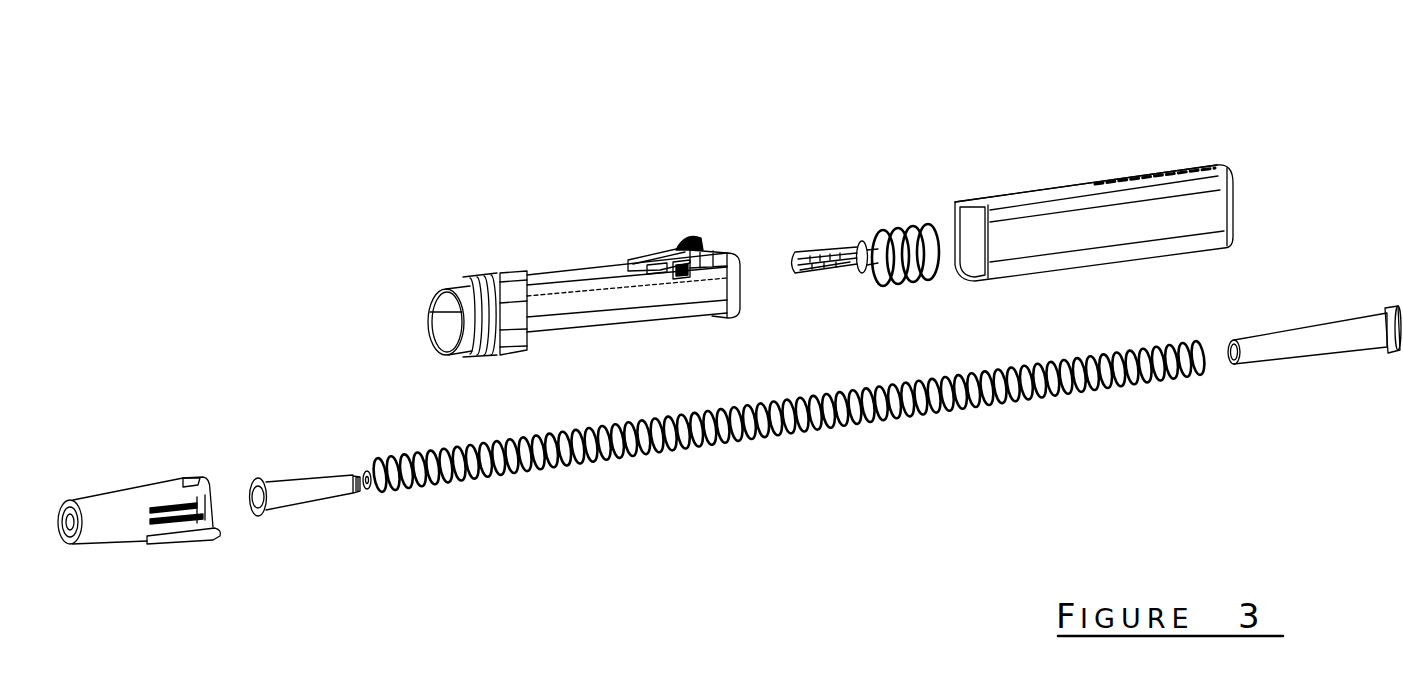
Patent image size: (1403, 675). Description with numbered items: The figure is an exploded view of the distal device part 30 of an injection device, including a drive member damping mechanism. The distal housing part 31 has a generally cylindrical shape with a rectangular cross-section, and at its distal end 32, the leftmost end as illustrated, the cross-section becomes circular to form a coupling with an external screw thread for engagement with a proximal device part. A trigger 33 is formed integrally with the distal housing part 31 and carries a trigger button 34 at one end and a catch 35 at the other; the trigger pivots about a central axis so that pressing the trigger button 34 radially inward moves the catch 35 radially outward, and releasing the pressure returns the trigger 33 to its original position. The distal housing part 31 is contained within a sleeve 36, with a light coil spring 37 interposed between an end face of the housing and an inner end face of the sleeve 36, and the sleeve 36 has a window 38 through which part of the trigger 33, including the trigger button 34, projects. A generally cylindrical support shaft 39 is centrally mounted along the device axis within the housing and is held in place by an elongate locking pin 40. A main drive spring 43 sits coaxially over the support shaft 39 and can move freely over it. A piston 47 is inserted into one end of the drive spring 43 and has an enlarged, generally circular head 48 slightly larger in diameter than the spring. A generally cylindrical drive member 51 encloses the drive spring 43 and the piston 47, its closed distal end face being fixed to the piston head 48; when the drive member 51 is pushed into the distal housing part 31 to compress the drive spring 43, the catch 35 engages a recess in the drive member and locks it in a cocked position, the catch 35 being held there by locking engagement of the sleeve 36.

The distal device part 30 is at (655, 133).
The distal housing part 31 is at (533, 280).
The distal end 32 is at (445, 287).
The trigger 33 is at (690, 236).
The trigger button 34 is at (707, 243).
The catch 35 is at (622, 272).
The sleeve 36 is at (1017, 190).
The light coil spring 37 is at (900, 225).
The window 38 is at (1160, 170).
The support shaft 39 is at (1267, 363).
The locking pin 40 is at (833, 278).
The main drive spring 43 is at (677, 450).
The piston 47 is at (320, 498).
The head 48 is at (258, 474).
The drive member 51 is at (110, 490).